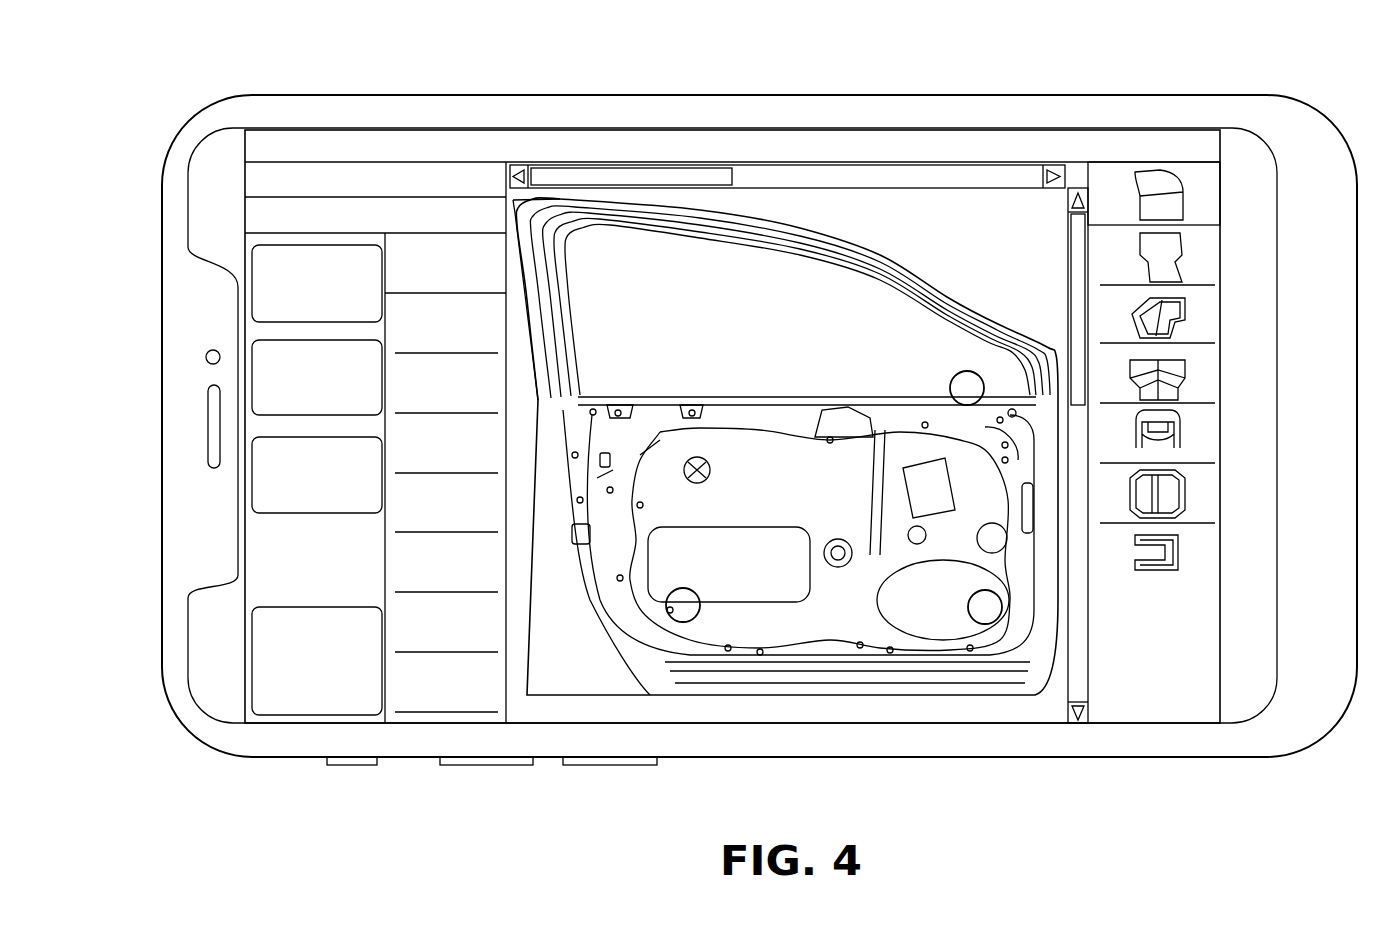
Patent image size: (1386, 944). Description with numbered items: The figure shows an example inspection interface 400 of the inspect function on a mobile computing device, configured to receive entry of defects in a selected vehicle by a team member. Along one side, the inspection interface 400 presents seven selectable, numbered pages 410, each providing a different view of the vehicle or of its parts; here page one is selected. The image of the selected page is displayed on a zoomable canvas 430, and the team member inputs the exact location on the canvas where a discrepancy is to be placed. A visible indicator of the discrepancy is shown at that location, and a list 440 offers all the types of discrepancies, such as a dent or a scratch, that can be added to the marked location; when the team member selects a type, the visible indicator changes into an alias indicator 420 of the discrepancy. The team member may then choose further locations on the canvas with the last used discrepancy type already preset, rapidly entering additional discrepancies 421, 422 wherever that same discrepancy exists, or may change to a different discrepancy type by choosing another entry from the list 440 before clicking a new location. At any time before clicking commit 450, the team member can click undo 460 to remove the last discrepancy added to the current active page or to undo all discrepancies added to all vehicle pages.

The inspection interface 400 is at (727, 809).
The selectable numbered pages 410 is at (1088, 90).
The alias indicator 420 is at (955, 377).
The discrepancy 421 is at (690, 622).
The discrepancy 422 is at (1000, 622).
The zoomable canvas 430 is at (947, 217).
The list of discrepancy types 440 is at (388, 765).
The commit 450 is at (323, 688).
The undo 460 is at (252, 382).